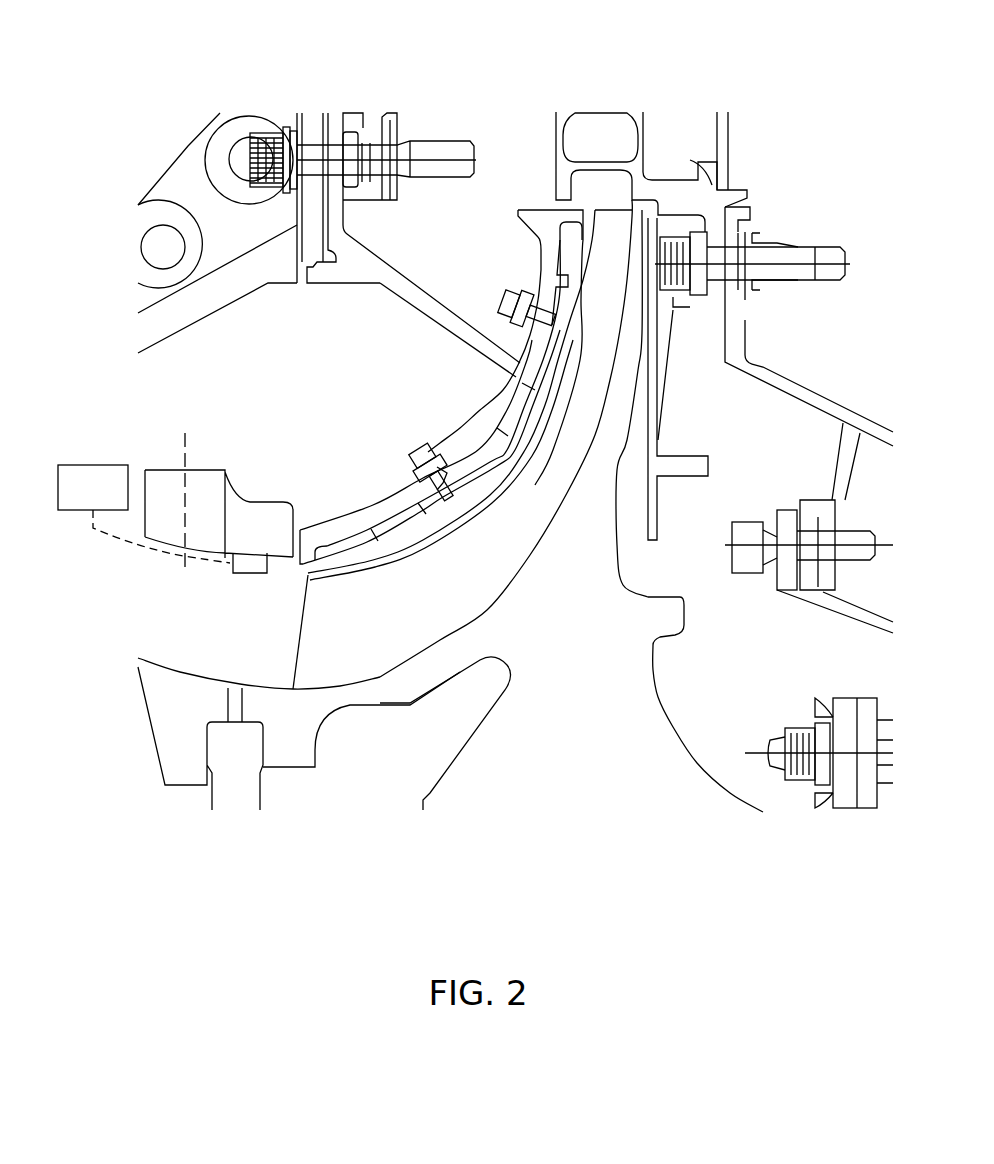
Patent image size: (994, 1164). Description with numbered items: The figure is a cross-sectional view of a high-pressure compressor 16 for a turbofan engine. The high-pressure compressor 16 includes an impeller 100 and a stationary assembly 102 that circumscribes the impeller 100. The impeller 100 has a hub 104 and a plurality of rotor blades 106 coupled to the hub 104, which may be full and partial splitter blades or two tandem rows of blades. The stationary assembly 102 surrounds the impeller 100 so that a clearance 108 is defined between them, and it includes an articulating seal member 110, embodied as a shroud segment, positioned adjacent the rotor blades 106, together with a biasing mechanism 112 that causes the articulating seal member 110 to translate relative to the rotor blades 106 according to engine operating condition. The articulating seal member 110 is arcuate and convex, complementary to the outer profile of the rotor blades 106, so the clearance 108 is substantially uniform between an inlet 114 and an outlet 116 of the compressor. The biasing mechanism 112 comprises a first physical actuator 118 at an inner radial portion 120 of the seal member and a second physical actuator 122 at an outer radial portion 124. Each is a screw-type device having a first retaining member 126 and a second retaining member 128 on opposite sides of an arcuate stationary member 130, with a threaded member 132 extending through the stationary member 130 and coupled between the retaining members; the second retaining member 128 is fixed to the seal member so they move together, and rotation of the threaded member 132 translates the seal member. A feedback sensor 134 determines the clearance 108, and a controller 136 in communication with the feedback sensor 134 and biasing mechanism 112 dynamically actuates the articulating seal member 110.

The high-pressure compressor 16 is at (435, 80).
The impeller 100 is at (666, 838).
The stationary assembly 102 is at (438, 240).
The hub 104 is at (556, 700).
The rotor blades 106 is at (470, 552).
The clearance 108 is at (290, 582).
The articulating seal member 110 is at (370, 518).
The biasing mechanism 112 is at (470, 304).
The inlet 114 is at (150, 586).
The outlet 116 is at (582, 180).
The first physical actuator 118 is at (390, 445).
The inner radial portion 120 is at (322, 502).
The second physical actuator 122 is at (508, 268).
The outer radial portion 124 is at (515, 232).
The first retaining member 126 is at (560, 350).
The second retaining member 128 is at (528, 385).
The arcuate stationary member 130 is at (353, 268).
The threaded member 132 is at (497, 300).
The feedback sensor 134 is at (250, 563).
The controller 136 is at (77, 500).